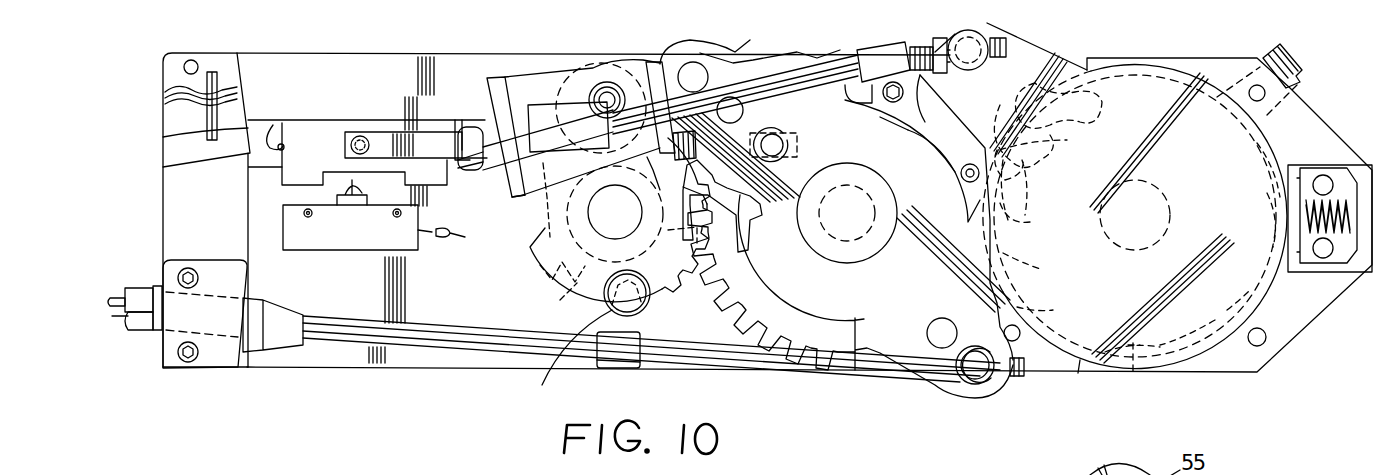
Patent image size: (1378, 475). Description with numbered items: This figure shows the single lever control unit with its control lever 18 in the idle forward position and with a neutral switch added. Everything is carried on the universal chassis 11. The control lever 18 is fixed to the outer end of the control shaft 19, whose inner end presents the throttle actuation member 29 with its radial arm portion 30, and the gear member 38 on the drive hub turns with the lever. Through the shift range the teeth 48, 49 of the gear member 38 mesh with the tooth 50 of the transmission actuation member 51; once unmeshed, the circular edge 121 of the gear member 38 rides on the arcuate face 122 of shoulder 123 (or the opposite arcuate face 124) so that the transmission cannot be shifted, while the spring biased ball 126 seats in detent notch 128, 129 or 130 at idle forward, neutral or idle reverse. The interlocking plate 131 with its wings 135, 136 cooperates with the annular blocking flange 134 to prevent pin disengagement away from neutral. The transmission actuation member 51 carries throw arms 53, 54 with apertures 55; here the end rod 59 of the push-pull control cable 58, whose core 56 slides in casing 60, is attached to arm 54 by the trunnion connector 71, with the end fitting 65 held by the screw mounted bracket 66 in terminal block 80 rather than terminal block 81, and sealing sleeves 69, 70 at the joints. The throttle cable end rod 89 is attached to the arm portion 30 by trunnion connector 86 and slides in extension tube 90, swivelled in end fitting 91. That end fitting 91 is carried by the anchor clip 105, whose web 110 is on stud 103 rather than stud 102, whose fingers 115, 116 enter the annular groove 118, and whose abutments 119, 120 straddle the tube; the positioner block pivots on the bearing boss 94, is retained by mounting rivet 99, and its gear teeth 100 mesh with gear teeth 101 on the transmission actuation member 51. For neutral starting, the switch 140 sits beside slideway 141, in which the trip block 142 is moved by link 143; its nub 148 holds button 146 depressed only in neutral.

The universal chassis 11 is at (432, 360).
The control lever 18 is at (1290, 64).
The control shaft 19 is at (1170, 196).
The throttle actuation member 29 is at (1187, 334).
The throttle actuating arm portion 30 is at (1027, 55).
The gear member 38 is at (1240, 143).
The tooth 48 is at (1078, 118).
The tooth 49 is at (1053, 138).
The tooth 50 is at (952, 110).
The transmission actuation member 51 is at (848, 280).
The throw arm 53 is at (690, 50).
The throw arm 54 is at (995, 397).
The aperture 55 is at (703, 70).
The core 56 is at (118, 297).
The push-pull control cable 58 is at (145, 280).
The end rod 59 is at (690, 360).
The casing 60 is at (125, 330).
The end fitting 65 is at (157, 328).
The screw mounted bracket 66 is at (238, 288).
The resilient sealing sleeve 69 is at (280, 346).
The resilient sealing sleeve 70 is at (622, 364).
The trunnion connector 71 is at (972, 382).
The terminal block 80 is at (243, 360).
The terminal block 81 is at (233, 70).
The trunnion connector 86 is at (983, 64).
The end rod 89 is at (915, 57).
The extension tube 90 is at (780, 90).
The end fitting 91 is at (482, 130).
The bearing boss 94 is at (545, 262).
The mounting rivet 99 is at (615, 214).
The gear teeth 100 is at (591, 298).
The gear teeth 101 is at (712, 317).
The stud 102 is at (563, 361).
The stud 103 is at (597, 100).
The anchor clip 105 is at (536, 210).
The web 110 is at (530, 80).
The finger 115 is at (491, 80).
The finger 116 is at (512, 198).
The annular groove 118 is at (488, 170).
The abutment 119 is at (650, 70).
The abutment 120 is at (660, 206).
The circular edge 121 is at (1040, 312).
The arcuate face 122 is at (1030, 266).
The shoulder 123 is at (1027, 167).
The arcuate face 124 is at (820, 56).
The spring biased ball 126 is at (1267, 218).
The detent notch 128 is at (1273, 190).
The detent notch 129 is at (1227, 310).
The detent notch 130 is at (1133, 372).
The interlocking plate 131 is at (930, 149).
The annular blocking flange 134 is at (1078, 373).
The lateral wing 135 is at (1022, 225).
The lateral wing 136 is at (860, 53).
The switch 140 is at (327, 242).
The slideway 141 is at (273, 125).
The trip block 142 is at (344, 131).
The link 143 is at (425, 130).
The button 146 is at (358, 188).
The nub 148 is at (290, 182).